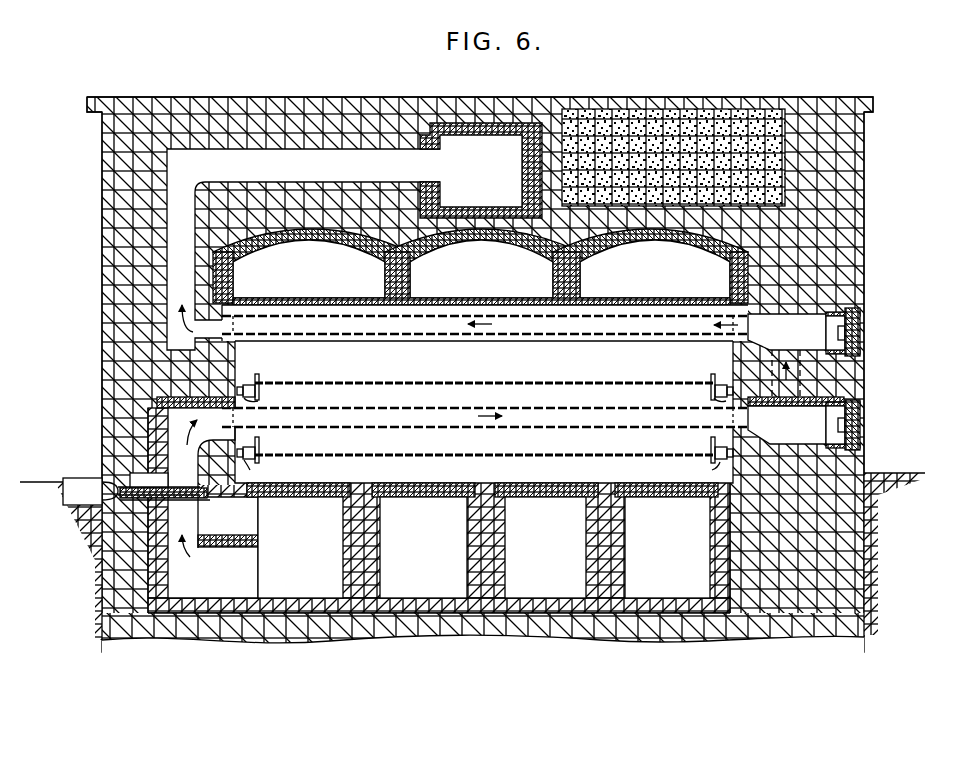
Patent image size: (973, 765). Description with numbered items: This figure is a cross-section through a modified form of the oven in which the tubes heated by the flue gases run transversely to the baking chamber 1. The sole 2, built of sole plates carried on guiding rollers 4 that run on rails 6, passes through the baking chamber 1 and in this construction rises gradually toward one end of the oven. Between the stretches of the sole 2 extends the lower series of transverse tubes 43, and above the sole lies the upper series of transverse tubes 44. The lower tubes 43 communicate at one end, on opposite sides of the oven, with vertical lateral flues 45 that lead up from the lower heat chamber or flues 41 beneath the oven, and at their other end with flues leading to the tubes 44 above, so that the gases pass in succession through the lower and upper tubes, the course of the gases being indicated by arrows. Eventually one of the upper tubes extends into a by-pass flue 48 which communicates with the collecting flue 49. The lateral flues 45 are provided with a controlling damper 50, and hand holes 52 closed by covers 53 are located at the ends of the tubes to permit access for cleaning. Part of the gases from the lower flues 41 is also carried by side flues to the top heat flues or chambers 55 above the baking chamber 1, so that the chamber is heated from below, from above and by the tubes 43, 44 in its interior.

The baking chamber 1 is at (484, 412).
The sole 2 is at (484, 418).
The guiding rollers 4 is at (249, 386).
The rails 6 is at (250, 401).
The lower heat chamber or flues 41 is at (288, 563).
The lower series of transverse tubes 43 is at (576, 418).
The upper series of transverse tubes 44 is at (549, 330).
The vertical lateral flues 45 is at (213, 503).
The by-pass flue 48 is at (303, 249).
The collecting flue 49 is at (481, 170).
The controlling damper 50 is at (112, 524).
The hand holes 52 is at (796, 379).
The covers 53 is at (862, 334).
The top heat flues or chambers 55 is at (480, 267).